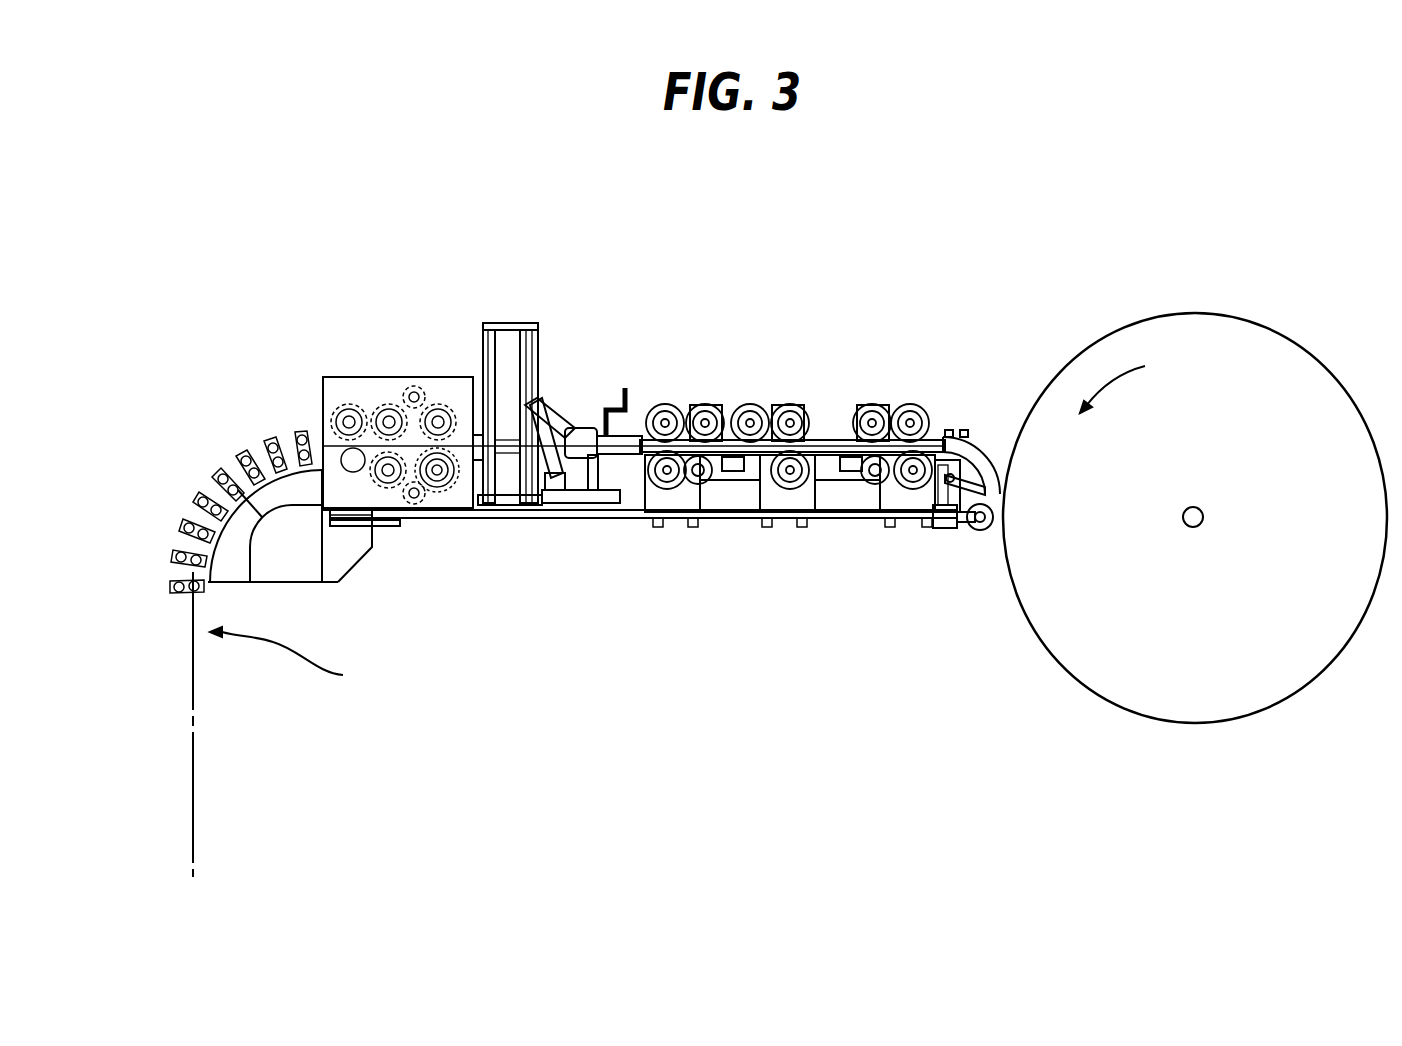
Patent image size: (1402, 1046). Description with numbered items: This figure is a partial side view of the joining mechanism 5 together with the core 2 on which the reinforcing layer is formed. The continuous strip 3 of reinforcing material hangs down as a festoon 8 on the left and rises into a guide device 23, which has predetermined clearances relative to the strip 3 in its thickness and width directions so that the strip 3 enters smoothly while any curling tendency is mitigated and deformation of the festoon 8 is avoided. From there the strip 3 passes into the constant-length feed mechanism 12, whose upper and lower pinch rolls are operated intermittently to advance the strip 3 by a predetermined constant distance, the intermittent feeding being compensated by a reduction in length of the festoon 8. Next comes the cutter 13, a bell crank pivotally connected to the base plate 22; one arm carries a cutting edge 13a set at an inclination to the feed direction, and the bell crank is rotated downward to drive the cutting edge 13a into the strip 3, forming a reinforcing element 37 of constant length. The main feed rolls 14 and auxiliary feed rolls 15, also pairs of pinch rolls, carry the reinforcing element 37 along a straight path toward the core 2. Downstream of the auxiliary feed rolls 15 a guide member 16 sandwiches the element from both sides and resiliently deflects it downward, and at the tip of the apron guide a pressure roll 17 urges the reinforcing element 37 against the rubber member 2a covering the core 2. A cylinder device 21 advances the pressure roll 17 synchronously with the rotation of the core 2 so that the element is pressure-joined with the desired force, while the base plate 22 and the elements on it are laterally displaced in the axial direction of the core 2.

The core 2 is at (1289, 326).
The rubber member 2a is at (1186, 310).
The continuous strip 3 is at (288, 659).
The joining mechanism 5 is at (654, 315).
The festoon 8 is at (195, 772).
The constant-length feed mechanism 12 is at (385, 354).
The cutter 13 is at (563, 315).
The cutting edge 13a is at (560, 405).
The main feed rolls 14 is at (735, 375).
The auxiliary feed rolls 15 is at (918, 369).
The guide member 16 is at (996, 452).
The pressure roll 17 is at (985, 540).
The cylinder device 21 is at (945, 530).
The base plate 22 is at (607, 520).
The guide device 23 is at (225, 415).
The reinforcing element 37 is at (836, 430).